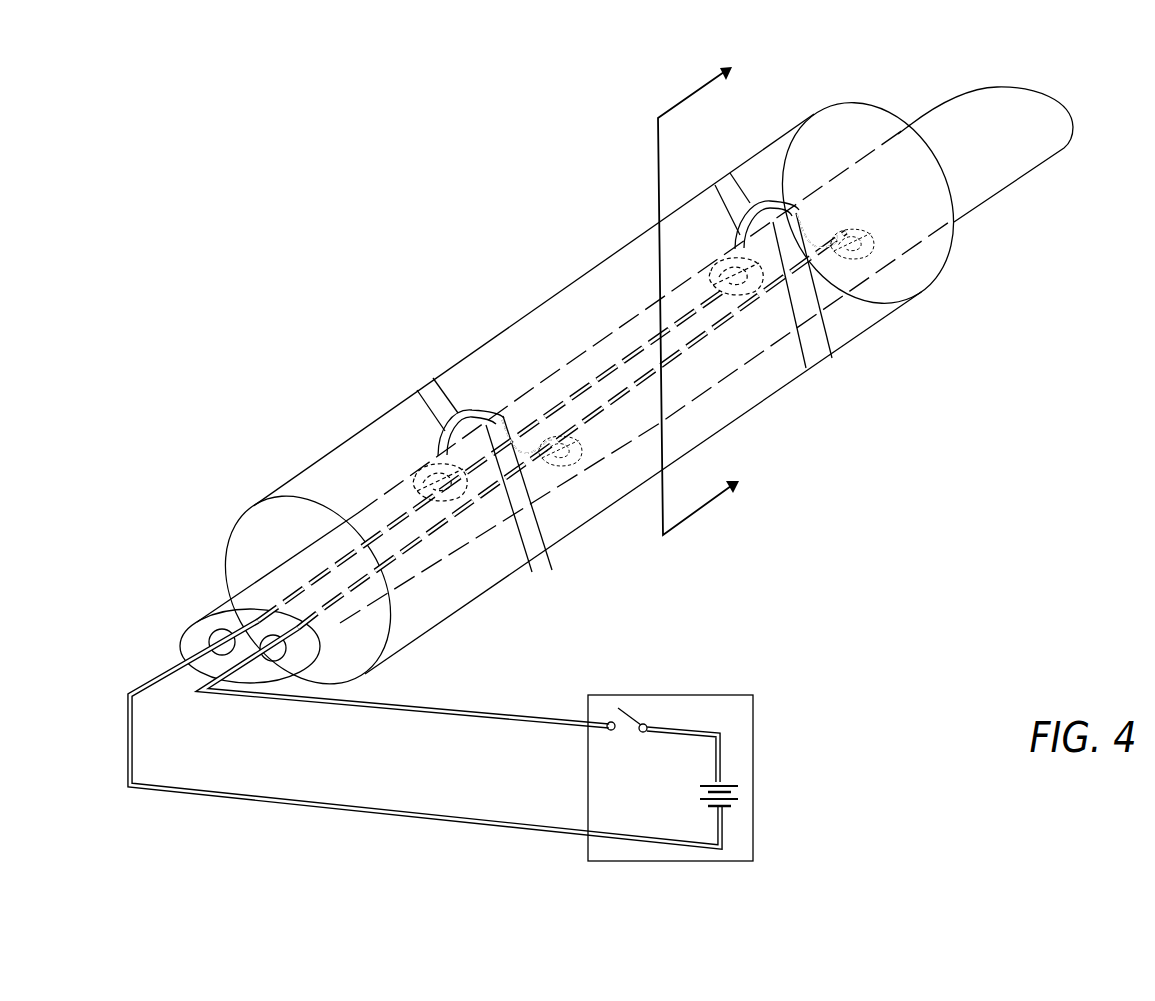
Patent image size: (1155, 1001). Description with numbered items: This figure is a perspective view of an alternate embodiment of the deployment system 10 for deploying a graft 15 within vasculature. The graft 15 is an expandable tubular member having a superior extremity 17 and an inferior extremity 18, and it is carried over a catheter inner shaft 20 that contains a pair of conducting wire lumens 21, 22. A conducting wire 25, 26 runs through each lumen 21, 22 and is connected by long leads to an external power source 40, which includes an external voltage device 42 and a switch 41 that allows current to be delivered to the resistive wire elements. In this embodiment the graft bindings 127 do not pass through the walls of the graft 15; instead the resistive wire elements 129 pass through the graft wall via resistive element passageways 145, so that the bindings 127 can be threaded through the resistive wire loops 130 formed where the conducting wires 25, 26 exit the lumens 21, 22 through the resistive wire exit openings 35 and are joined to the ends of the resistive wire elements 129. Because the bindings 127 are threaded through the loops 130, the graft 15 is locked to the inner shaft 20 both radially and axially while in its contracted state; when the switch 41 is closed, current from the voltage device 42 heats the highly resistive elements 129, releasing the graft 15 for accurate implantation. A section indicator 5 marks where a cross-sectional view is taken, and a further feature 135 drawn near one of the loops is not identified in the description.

The section line 5- 5 is at (710, 287).
The deployment system 10 is at (431, 207).
The graft 15 is at (512, 277).
The superior extremity 17 is at (178, 524).
The inferior extremity 18 is at (892, 96).
The inner shaft 20 is at (199, 608).
The conducting wire lumen 21 is at (210, 637).
The conducting wire lumen 22 is at (282, 657).
The conducting wire 25 is at (249, 827).
The conducting wire 26 is at (548, 703).
The resistive wire exit opening 35 is at (418, 490).
The external power source 40 is at (756, 719).
The switch 41 is at (633, 710).
The external voltage device 42 is at (740, 796).
The graft bindings 127 is at (414, 375).
The resistive wire elements 129 is at (474, 497).
The resistive wire loops 130 is at (472, 406).
The knot 135 is at (560, 468).
The resistive element passageways 145 is at (425, 462).